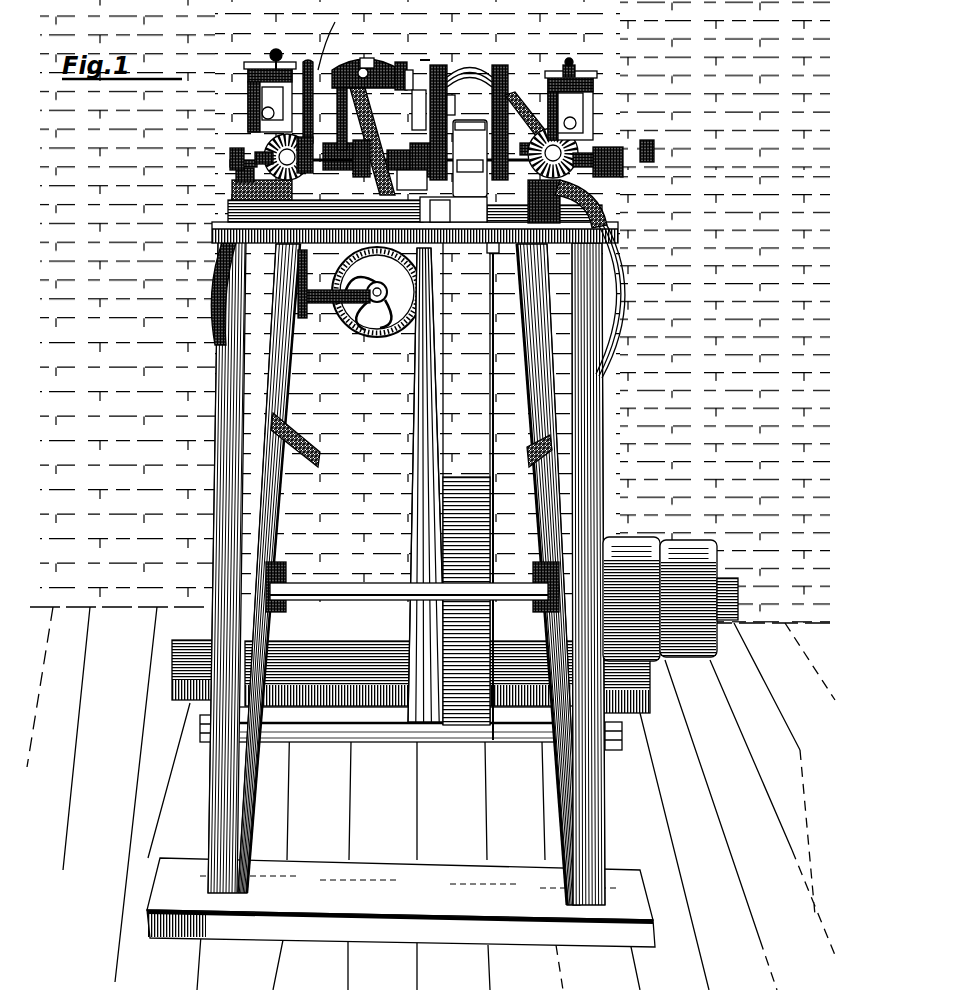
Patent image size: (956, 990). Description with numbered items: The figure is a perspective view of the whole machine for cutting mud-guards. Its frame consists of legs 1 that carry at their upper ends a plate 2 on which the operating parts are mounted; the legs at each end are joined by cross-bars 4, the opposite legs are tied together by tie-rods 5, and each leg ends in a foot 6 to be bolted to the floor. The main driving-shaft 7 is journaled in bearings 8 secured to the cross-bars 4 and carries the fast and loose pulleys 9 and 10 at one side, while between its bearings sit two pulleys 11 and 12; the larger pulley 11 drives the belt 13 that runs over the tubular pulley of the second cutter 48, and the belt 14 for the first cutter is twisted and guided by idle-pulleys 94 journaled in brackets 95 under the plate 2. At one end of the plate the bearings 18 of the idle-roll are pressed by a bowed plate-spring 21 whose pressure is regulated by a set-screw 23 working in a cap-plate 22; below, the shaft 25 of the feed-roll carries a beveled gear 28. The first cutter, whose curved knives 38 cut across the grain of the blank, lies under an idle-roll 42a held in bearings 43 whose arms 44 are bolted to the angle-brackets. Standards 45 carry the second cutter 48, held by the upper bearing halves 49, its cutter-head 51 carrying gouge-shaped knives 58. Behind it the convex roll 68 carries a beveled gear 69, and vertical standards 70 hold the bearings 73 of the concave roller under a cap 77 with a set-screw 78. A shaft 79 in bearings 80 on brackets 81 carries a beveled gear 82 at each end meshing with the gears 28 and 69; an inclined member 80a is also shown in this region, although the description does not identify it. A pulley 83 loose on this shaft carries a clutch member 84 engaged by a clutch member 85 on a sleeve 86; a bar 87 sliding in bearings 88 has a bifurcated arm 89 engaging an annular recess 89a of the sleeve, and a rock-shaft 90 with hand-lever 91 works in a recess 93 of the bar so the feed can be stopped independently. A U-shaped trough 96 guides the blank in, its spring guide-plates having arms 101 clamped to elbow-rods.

The legs 1 is at (268, 522).
The plate 2 is at (213, 250).
The cross-bars 4 is at (262, 645).
The tie-rods 5 is at (440, 742).
The foot 6 is at (242, 890).
The main driving-shaft 7 is at (363, 582).
The bearings 8 is at (300, 556).
The fast pulley 9 is at (638, 540).
The loose pulley 10 is at (695, 545).
The pulley 11 is at (495, 460).
The pulley 12 is at (405, 530).
The belt 13 is at (466, 484).
The belt 14 is at (428, 412).
The bearings 18 is at (262, 108).
The bowed plate-spring 21 is at (248, 76).
The cap-plate 22 is at (246, 66).
The set-screw 23 is at (274, 48).
The shaft 25 is at (268, 152).
The beveled gear 28 is at (230, 156).
The knives 38 is at (374, 62).
The idle-roll 42a is at (368, 58).
The bearings 43 is at (400, 60).
The arms 44 is at (330, 80).
The standards 45 is at (495, 262).
The second cutter 48 is at (418, 110).
The upper halves of bearings 49 is at (440, 65).
The cutter-head 51 is at (405, 63).
The knives 58 is at (424, 58).
The roll 68 is at (530, 140).
The beveled gear 69 is at (578, 148).
The vertical standards 70 is at (608, 210).
The bearings 73 is at (580, 105).
The cap 77 is at (586, 72).
The set-screw 78 is at (573, 64).
The shaft 79 is at (529, 109).
The bearings 80 is at (624, 160).
The inclined rod 80a is at (375, 141).
The brackets 81 is at (618, 208).
The beveled gear 82 is at (236, 176).
The pulley 83 is at (453, 171).
The clutch member 84 is at (470, 165).
The clutch member 85 is at (440, 150).
The sleeve 86 is at (396, 165).
The bar 87 is at (377, 292).
The bearings 88 is at (270, 200).
The upturned bifurcated arm 89 is at (440, 205).
The annular recess 89a is at (447, 120).
The rock-shaft 90 is at (300, 285).
The hand-lever 91 is at (306, 60).
The recess 93 is at (258, 222).
The idle-pulleys 94 is at (375, 335).
The brackets 95 is at (362, 320).
The U-shaped trough 96 is at (386, 217).
The arms 101 is at (228, 166).